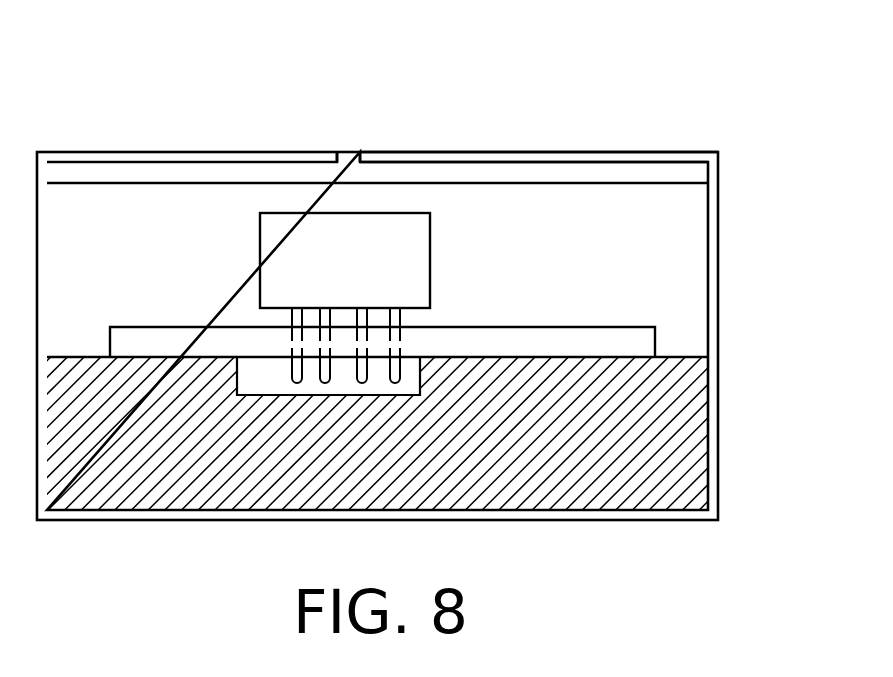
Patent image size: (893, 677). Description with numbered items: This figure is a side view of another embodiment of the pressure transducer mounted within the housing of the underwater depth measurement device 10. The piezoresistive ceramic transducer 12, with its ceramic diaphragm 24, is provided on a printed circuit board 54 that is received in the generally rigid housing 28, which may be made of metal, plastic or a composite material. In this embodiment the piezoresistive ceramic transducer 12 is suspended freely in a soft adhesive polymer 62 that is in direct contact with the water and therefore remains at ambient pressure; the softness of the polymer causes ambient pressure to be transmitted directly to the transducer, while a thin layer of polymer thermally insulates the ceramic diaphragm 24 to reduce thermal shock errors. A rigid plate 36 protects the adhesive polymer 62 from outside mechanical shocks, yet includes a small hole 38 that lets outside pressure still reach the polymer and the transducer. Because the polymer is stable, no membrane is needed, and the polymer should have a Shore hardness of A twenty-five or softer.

The underwater depth measurement device 10 is at (150, 72).
The piezoresistive ceramic transducer 12 is at (244, 240).
The ceramic diaphragm 24 is at (403, 213).
The housing 28 is at (678, 430).
The rigid plate 36 is at (393, 152).
The small hole 38 is at (348, 157).
The printed circuit board 54 is at (633, 343).
The soft adhesive polymer 62 is at (633, 242).